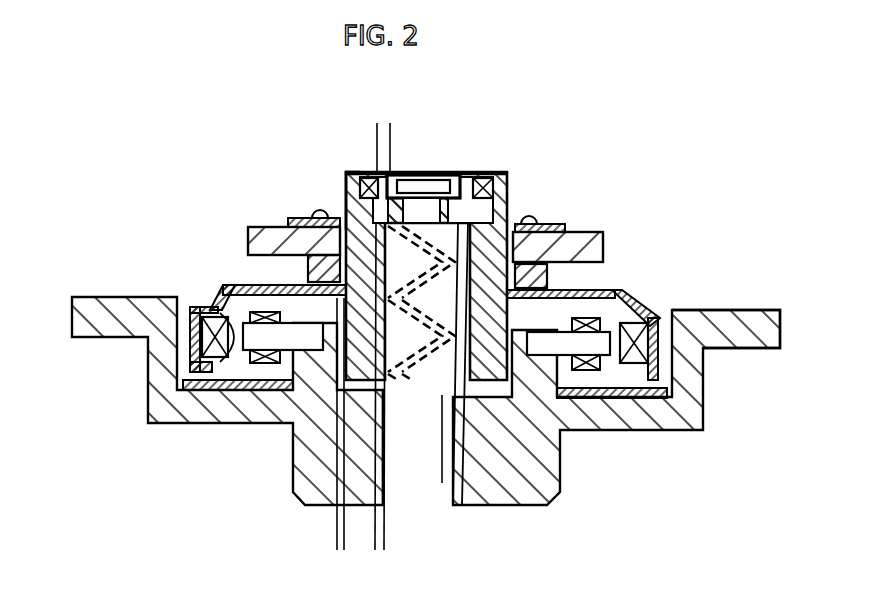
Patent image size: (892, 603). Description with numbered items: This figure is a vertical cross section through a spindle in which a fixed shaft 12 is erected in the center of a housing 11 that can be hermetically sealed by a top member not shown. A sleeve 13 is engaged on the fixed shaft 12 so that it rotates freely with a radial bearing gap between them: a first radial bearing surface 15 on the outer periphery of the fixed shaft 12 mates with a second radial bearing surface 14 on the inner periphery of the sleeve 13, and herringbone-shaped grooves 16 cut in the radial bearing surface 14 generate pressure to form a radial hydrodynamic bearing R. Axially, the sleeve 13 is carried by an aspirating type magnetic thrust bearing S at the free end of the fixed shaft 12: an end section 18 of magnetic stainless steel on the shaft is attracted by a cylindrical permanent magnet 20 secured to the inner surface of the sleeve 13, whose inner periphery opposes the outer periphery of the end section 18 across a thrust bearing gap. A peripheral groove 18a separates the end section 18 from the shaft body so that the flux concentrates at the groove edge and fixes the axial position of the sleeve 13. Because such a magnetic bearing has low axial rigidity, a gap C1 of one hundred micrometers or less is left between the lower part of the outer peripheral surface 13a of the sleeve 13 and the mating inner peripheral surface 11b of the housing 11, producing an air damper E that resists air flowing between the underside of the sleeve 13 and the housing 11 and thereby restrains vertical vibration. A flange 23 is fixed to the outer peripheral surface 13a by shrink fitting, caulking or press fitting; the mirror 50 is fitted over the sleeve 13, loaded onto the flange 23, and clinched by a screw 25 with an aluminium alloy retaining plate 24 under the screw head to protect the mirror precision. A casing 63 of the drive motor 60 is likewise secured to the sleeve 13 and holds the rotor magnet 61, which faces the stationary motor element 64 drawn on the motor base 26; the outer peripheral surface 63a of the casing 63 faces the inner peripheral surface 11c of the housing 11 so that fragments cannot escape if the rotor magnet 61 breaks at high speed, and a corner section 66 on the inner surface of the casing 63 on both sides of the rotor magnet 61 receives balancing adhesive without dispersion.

The housing 11 is at (300, 494).
The inner peripheral surface 11b is at (376, 400).
The inner peripheral surface 11c is at (700, 320).
The fixed shaft 12 is at (453, 506).
The sleeve 13 is at (508, 184).
The outer peripheral surface 13a is at (320, 400).
The second radial bearing surface 14 is at (508, 215).
The first radial bearing surface 15 is at (556, 292).
The herringbone-shaped grooves 16 is at (346, 214).
The end section 18 is at (448, 177).
The peripheral groove 18a is at (456, 210).
The cylindrical permanent magnet 20 is at (492, 177).
The flange 23 is at (308, 270).
The retaining plate 24 is at (290, 220).
The screw 25 is at (314, 218).
The motor base 26 is at (655, 427).
The mirror 50 is at (592, 233).
The drive motor 60 is at (665, 360).
The rotor magnet 61 is at (614, 400).
The casing 63 is at (226, 290).
The outer peripheral surface 63a is at (655, 322).
The stator 64 is at (582, 372).
The corner section 66 is at (212, 372).
The magnetic thrust bearing S is at (366, 167).
The air damper E is at (334, 437).
The radial hydrodynamic bearing R is at (506, 536).
The gap C1 is at (336, 537).